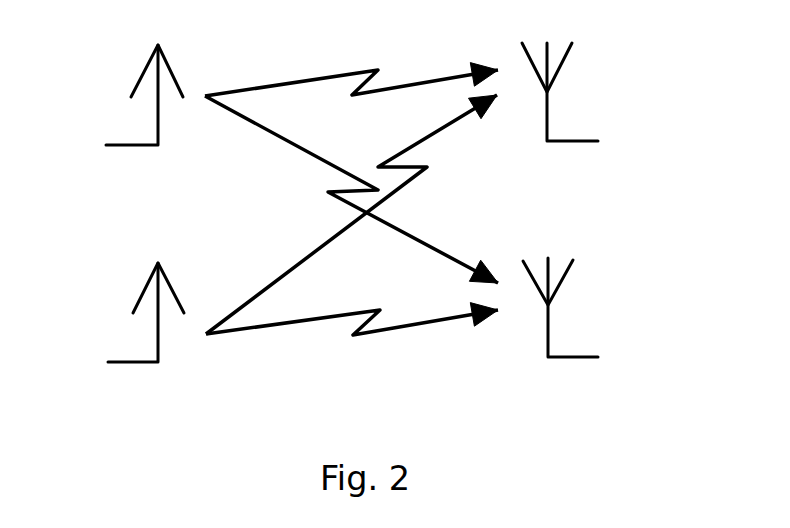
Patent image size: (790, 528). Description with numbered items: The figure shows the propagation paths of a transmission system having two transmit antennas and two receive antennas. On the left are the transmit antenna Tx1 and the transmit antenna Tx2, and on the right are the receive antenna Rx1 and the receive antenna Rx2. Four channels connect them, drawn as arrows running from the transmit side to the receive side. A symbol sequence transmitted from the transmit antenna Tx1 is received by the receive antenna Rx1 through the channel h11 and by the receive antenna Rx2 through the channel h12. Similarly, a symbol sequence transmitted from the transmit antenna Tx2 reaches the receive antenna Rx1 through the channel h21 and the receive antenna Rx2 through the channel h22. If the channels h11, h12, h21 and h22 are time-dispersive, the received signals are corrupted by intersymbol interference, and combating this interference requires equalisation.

The transmit antenna Tx1 is at (122, 95).
The transmit antenna Tx2 is at (124, 312).
The receive antenna Rx1 is at (587, 92).
The receive antenna Rx2 is at (587, 307).
The channel h11 is at (351, 68).
The channel h12 is at (351, 189).
The channel h21 is at (351, 214).
The channel h22 is at (352, 345).